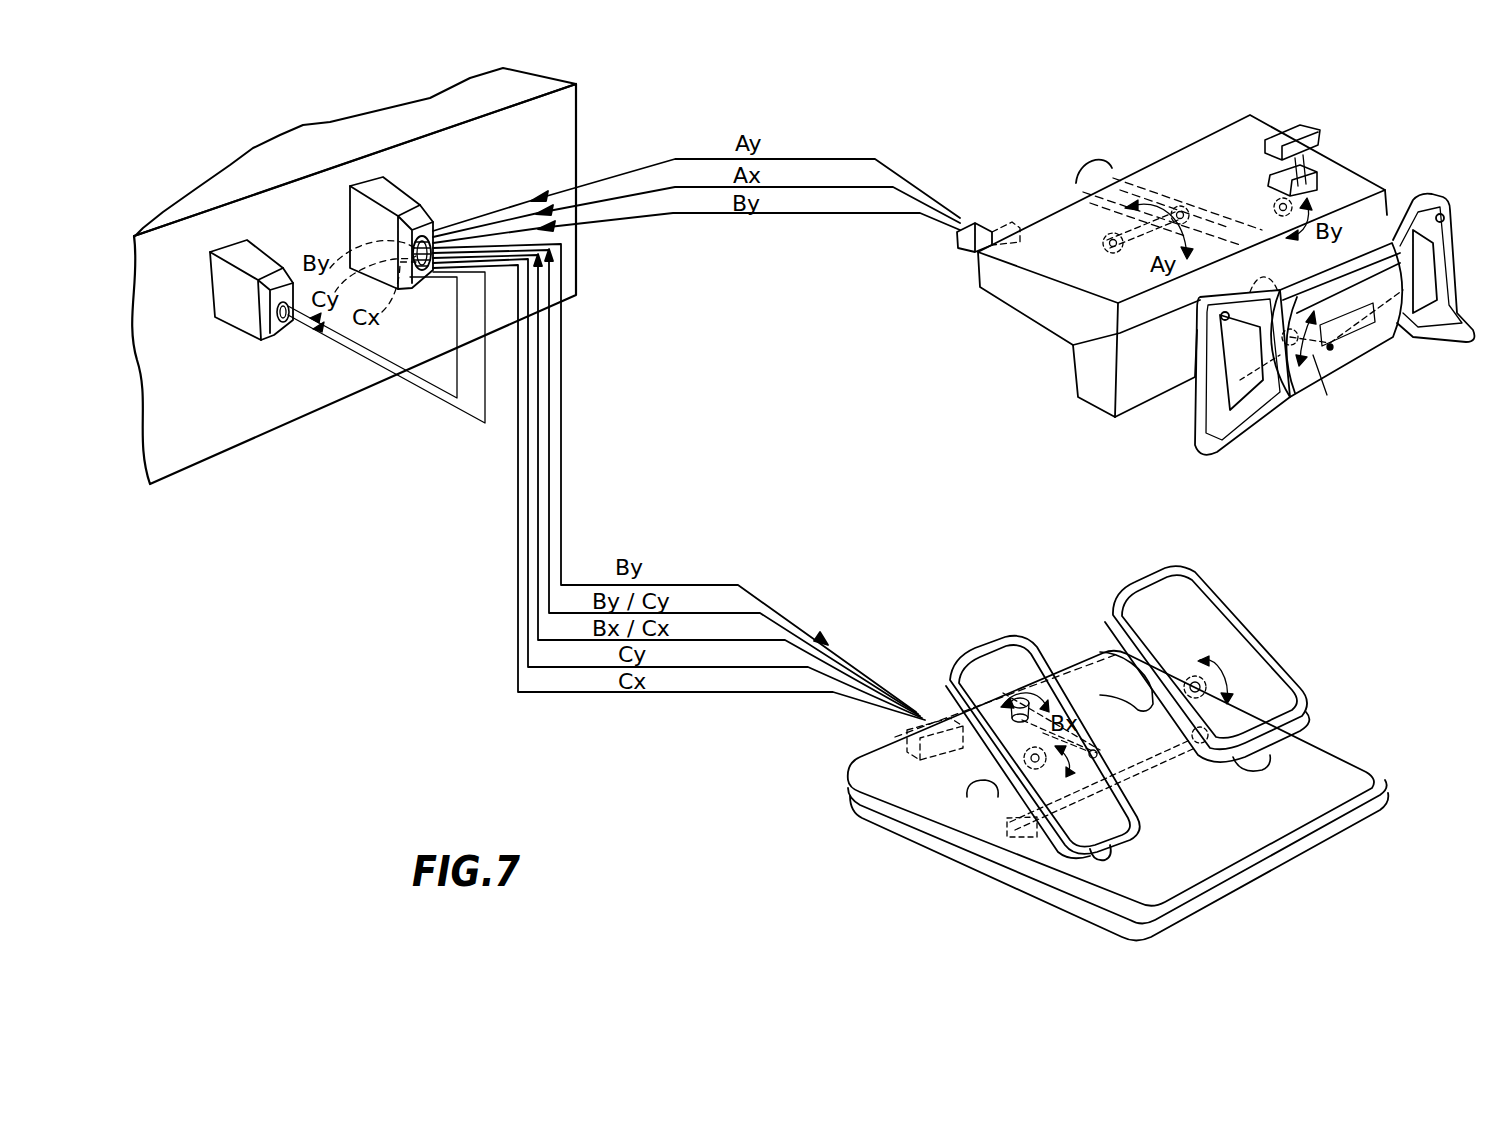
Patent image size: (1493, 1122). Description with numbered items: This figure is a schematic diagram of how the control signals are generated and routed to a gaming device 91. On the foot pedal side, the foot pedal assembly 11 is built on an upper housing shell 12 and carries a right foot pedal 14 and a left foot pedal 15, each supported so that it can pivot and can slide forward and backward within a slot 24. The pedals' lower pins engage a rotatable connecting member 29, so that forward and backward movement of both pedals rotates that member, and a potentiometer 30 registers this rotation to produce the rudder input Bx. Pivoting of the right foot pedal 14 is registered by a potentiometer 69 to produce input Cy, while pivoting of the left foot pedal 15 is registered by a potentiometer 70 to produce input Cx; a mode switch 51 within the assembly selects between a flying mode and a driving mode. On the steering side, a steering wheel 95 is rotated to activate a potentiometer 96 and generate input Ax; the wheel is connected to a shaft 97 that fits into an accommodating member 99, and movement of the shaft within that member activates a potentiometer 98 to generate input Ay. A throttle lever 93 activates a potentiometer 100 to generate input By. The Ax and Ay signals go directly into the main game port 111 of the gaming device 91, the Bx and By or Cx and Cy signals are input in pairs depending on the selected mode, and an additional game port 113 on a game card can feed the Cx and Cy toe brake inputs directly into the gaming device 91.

The foot pedal assembly 11 is at (1266, 881).
The upper housing shell 12 is at (1337, 781).
The right foot pedal 14 is at (1218, 631).
The left foot pedal 15 is at (1022, 650).
The slot 24 is at (975, 793).
The rotatable connecting member 29 is at (1170, 770).
The potentiometer 30 is at (1007, 700).
The mode switch 51 is at (905, 736).
The potentiometer 69 is at (1190, 672).
The potentiometer 70 is at (1020, 760).
The gaming device 91 is at (238, 412).
The throttle lever 93 is at (1322, 133).
The steering wheel 95 is at (1410, 333).
The potentiometer 96 is at (1240, 380).
The shaft 97 is at (1270, 282).
The potentiometer 98 is at (1107, 238).
The accommodating member 99 is at (1162, 203).
The potentiometer 100 is at (1276, 206).
The main game port 111 is at (360, 185).
The additional game port 113 is at (217, 242).